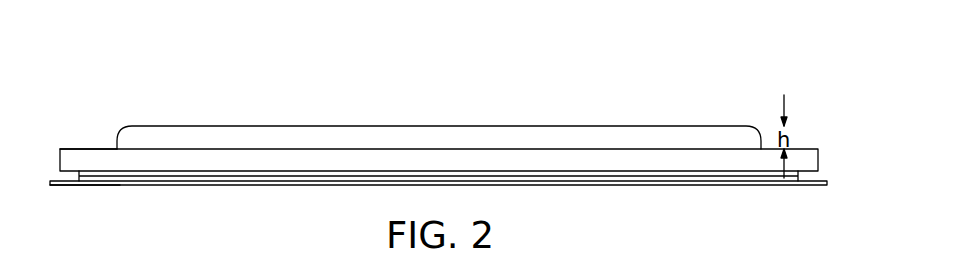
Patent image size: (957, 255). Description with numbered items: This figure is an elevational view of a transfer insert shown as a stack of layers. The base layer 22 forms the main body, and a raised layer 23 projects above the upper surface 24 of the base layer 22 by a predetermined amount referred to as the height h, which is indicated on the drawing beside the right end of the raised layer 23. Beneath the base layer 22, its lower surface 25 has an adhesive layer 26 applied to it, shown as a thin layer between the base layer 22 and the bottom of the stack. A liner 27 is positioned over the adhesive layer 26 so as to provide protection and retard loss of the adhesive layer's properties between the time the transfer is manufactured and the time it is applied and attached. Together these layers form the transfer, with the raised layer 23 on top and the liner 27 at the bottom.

The base layer 22 is at (818, 158).
The raised layer 23 is at (417, 127).
The upper surface 24 is at (93, 148).
The lower surface 25 is at (583, 182).
The adhesive layer 26 is at (800, 176).
The liner 27 is at (103, 186).